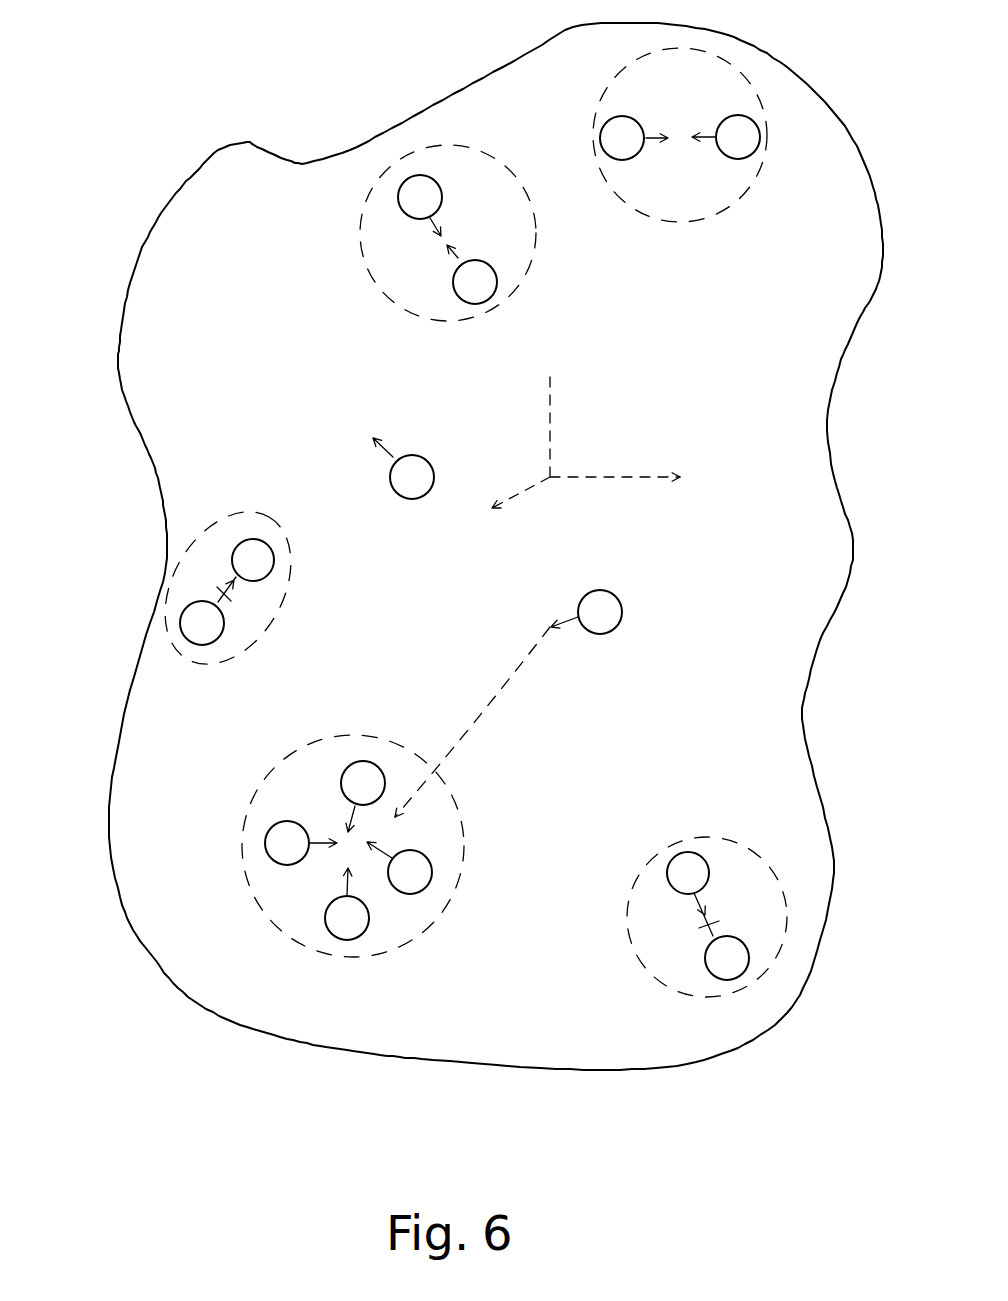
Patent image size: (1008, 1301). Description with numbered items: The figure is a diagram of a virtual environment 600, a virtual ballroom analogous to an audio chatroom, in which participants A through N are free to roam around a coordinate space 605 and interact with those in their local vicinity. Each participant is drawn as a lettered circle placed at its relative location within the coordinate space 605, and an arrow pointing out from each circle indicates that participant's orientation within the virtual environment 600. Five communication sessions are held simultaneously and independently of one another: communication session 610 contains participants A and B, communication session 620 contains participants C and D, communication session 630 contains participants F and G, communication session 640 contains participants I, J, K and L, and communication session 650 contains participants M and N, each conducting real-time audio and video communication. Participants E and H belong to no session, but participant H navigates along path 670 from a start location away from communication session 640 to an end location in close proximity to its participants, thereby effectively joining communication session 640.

The virtual environment 600 is at (153, 42).
The coordinate space 605 is at (617, 458).
The communication session 610 is at (725, 208).
The communication session 620 is at (513, 290).
The communication session 630 is at (223, 516).
The communication session 640 is at (437, 908).
The communication session 650 is at (657, 978).
The path 670 is at (513, 693).